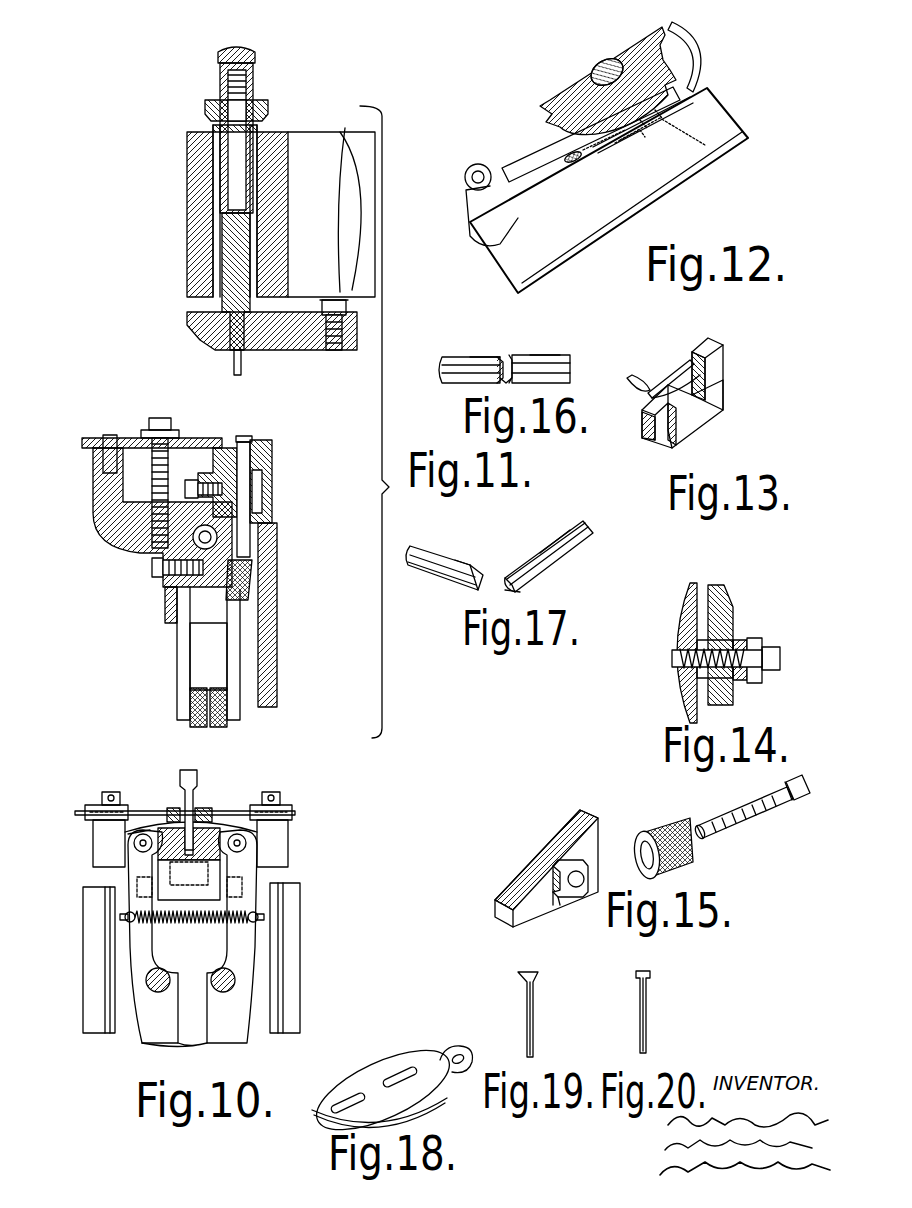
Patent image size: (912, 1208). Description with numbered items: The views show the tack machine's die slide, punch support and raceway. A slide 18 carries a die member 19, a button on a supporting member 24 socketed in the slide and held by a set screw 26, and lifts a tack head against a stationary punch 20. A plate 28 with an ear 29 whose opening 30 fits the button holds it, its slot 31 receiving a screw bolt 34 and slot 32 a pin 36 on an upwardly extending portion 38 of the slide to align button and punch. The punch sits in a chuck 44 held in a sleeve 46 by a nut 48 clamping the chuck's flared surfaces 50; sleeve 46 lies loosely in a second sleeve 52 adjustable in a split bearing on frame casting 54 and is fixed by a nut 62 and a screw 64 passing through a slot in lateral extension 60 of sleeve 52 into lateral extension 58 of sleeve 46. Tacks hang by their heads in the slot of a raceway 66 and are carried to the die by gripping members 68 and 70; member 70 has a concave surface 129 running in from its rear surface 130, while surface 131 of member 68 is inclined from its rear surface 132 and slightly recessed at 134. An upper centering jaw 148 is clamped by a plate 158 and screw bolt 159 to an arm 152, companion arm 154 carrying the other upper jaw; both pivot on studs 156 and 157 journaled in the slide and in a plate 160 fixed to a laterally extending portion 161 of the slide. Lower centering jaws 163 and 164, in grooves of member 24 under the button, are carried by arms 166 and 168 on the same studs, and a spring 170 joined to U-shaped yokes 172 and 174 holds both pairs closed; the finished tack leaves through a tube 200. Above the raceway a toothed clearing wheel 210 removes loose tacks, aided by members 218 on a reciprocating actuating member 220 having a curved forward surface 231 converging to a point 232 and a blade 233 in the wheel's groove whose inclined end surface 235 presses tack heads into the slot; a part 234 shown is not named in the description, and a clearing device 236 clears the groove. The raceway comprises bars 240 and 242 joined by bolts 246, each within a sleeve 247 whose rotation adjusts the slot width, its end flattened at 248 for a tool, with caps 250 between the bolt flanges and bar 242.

In FIG. 11, the slide 18 is at (278, 662).
In FIG. 11, the die member 19 is at (246, 445).
In FIG. 10, the die member 19 is at (197, 808).
In FIG. 11, the stationary punch 20 is at (243, 368).
In FIG. 11, the supporting member 24 is at (272, 463).
In FIG. 11, the set screw 26 is at (188, 490).
In FIG. 11, the plate 28 is at (224, 455).
In FIG. 18, the plate 28 is at (430, 1085).
In FIG. 11, the reduced extension or ear 29 is at (262, 441).
In FIG. 18, the reduced extension or ear 29 is at (470, 1056).
In FIG. 18, the opening 30 is at (460, 1052).
In FIG. 18, the slot 31 is at (398, 1070).
In FIG. 18, the slot 32 is at (348, 1095).
In FIG. 11, the screw bolt 34 is at (160, 418).
In FIG. 11, the pin 36 is at (110, 435).
In FIG. 11, the upwardly extending portion 38 is at (100, 490).
In FIG. 11, the chuck 44 is at (268, 107).
In FIG. 11, the sleeve 46 is at (275, 135).
In FIG. 11, the nut 48 is at (254, 68).
In FIG. 11, the flared surfaces 50 is at (225, 346).
In FIG. 11, the second sleeve 52 is at (288, 162).
In FIG. 11, the casting 54 is at (352, 140).
In FIG. 11, the lateral extension 58 is at (290, 350).
In FIG. 11, the lateral extension 60 is at (335, 352).
In FIG. 11, the nut 62 is at (256, 102).
In FIG. 11, the screw 64 is at (345, 305).
In FIG. 12, the raceway 66 is at (560, 243).
In FIG. 13, the raceway 66 is at (715, 410).
In FIG. 16, the gripping member 68 is at (450, 380).
In FIG. 17, the gripping member 68 is at (445, 575).
In FIG. 16, the gripping member 70 is at (560, 378).
In FIG. 17, the gripping member 70 is at (590, 535).
In FIG. 16, the concave tack engaging surface 129 is at (515, 357).
In FIG. 17, the concave tack engaging surface 129 is at (512, 578).
In FIG. 16, the rear surface 130 is at (545, 357).
In FIG. 17, the rear surface 130 is at (555, 540).
In FIG. 10, the rear surface 130 is at (203, 822).
In FIG. 16, the tack engaging surface 131 is at (505, 378).
In FIG. 16, the rear surface 132 is at (480, 357).
In FIG. 17, the rear surface 132 is at (470, 566).
In FIG. 16, the recess 134 is at (502, 362).
In FIG. 17, the recess 134 is at (480, 582).
In FIG. 10, the upper centering jaw 148 is at (172, 822).
In FIG. 10, the arm 152 is at (100, 840).
In FIG. 10, the arm 154 is at (288, 847).
In FIG. 10, the stud 156 is at (155, 992).
In FIG. 10, the stud 157 is at (236, 980).
In FIG. 10, the plates 158 is at (90, 810).
In FIG. 10, the screw bolts 159 is at (110, 793).
In FIG. 11, the plate 160 is at (165, 600).
In FIG. 11, the laterally extending portion 161 is at (215, 590).
In FIG. 10, the lower centering jaw 163 is at (128, 834).
In FIG. 10, the lower centering jaw 164 is at (222, 828).
In FIG. 10, the arm 166 is at (128, 885).
In FIG. 10, the arm 168 is at (250, 895).
In FIG. 11, the spring 170 is at (152, 568).
In FIG. 10, the spring 170 is at (190, 924).
In FIG. 10, the U-shaped yoke 172 is at (128, 920).
In FIG. 10, the U-shaped yoke 174 is at (262, 918).
In FIG. 11, the tube 200 is at (255, 582).
In FIG. 12, the toothed clearing wheel 210 is at (615, 45).
In FIG. 13, the members 218 is at (715, 372).
In FIG. 12, the actuating member 220 is at (520, 170).
In FIG. 12, the curved forward surface 231 is at (603, 150).
In FIG. 12, the point 232 is at (628, 135).
In FIG. 12, the blade 233 is at (640, 133).
In FIG. 13, the blade 233 is at (680, 360).
In FIG. 12, the guide 234 is at (662, 115).
In FIG. 12, the inclined end surface 235 is at (700, 85).
In FIG. 12, the clearing device 236 is at (700, 58).
In FIG. 13, the clearing device 236 is at (640, 380).
In FIG. 14, the bar 240 is at (690, 590).
In FIG. 14, the bar 242 is at (730, 600).
In FIG. 15, the bar 242 is at (580, 840).
In FIG. 14, the bolts 246 is at (773, 648).
In FIG. 15, the bolts 246 is at (775, 800).
In FIG. 14, the sleeve 247 is at (680, 690).
In FIG. 15, the sleeve 247 is at (580, 872).
In FIG. 15, the flattened sides 248 is at (568, 897).
In FIG. 14, the caps 250 is at (760, 680).
In FIG. 15, the caps 250 is at (695, 850).